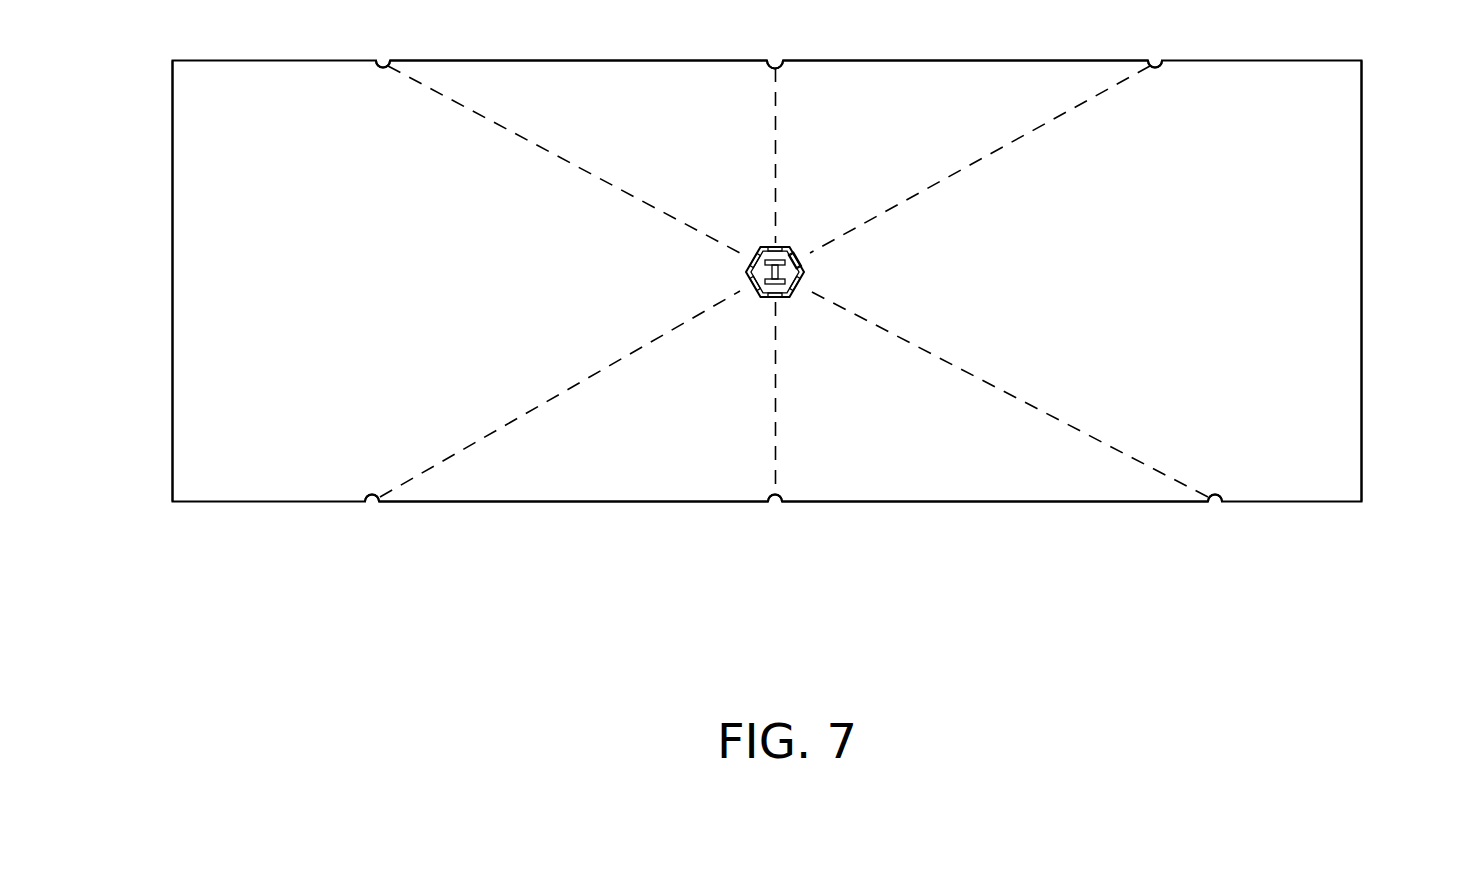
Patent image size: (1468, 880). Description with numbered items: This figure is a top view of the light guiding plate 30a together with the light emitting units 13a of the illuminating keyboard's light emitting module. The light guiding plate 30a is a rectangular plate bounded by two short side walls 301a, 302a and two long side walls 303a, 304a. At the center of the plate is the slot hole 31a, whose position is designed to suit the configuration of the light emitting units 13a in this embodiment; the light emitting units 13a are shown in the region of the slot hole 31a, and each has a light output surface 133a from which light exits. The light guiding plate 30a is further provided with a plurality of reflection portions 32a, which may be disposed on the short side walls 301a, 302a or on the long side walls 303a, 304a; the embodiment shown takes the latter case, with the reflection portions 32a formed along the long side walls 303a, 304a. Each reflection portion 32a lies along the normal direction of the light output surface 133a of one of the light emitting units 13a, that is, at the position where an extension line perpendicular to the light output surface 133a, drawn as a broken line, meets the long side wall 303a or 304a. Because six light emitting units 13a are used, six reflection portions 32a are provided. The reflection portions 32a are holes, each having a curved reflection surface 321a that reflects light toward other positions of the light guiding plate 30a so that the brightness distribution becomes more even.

The light guiding plate 30a is at (200, 100).
The short side wall 301a is at (172, 220).
The short side wall 302a is at (1362, 160).
The long side wall 303a is at (705, 503).
The long side wall 304a is at (863, 60).
The reflection portion 32a is at (1152, 58).
The curved reflection surface 321a is at (1215, 500).
The slot hole 31a is at (750, 253).
The light emitting unit 13a is at (805, 272).
The light output surface 133a is at (800, 290).